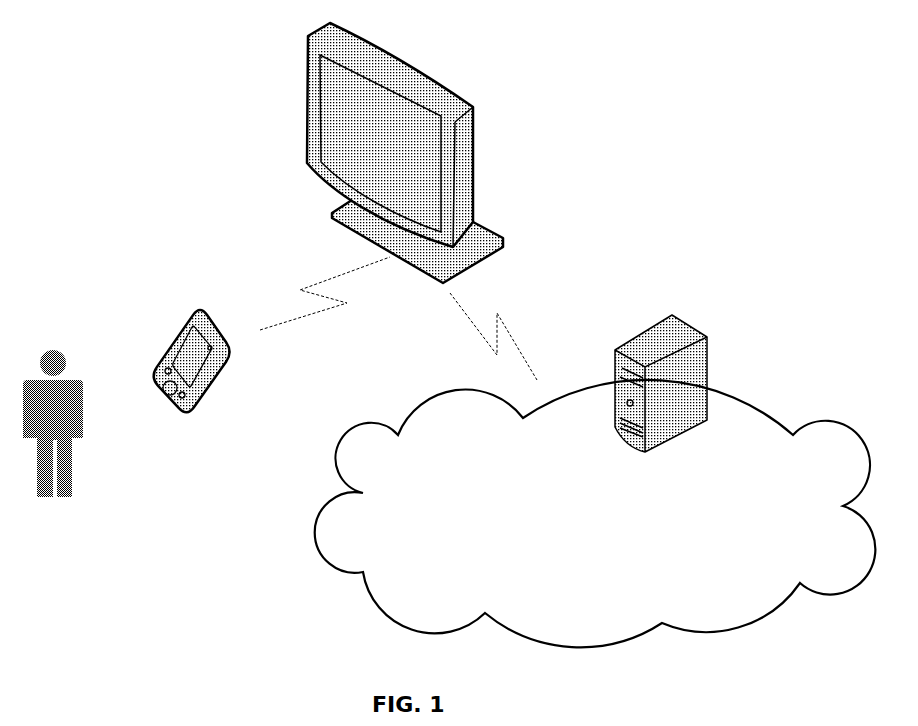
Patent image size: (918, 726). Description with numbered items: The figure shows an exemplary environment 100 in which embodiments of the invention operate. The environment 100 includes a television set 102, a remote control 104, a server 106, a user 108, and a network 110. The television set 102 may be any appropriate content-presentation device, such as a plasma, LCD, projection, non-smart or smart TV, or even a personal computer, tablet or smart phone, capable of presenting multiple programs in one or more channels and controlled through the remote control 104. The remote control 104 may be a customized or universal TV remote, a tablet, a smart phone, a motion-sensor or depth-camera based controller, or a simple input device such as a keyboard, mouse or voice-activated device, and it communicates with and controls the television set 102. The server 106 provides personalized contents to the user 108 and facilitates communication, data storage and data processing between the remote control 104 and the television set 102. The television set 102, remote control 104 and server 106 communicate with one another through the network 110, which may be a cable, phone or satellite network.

The environment 100 is at (131, 29).
The television set 102 is at (475, 128).
The remote control 104 is at (215, 387).
The server 106 is at (707, 382).
The user 108 is at (70, 487).
The network 110 is at (438, 495).